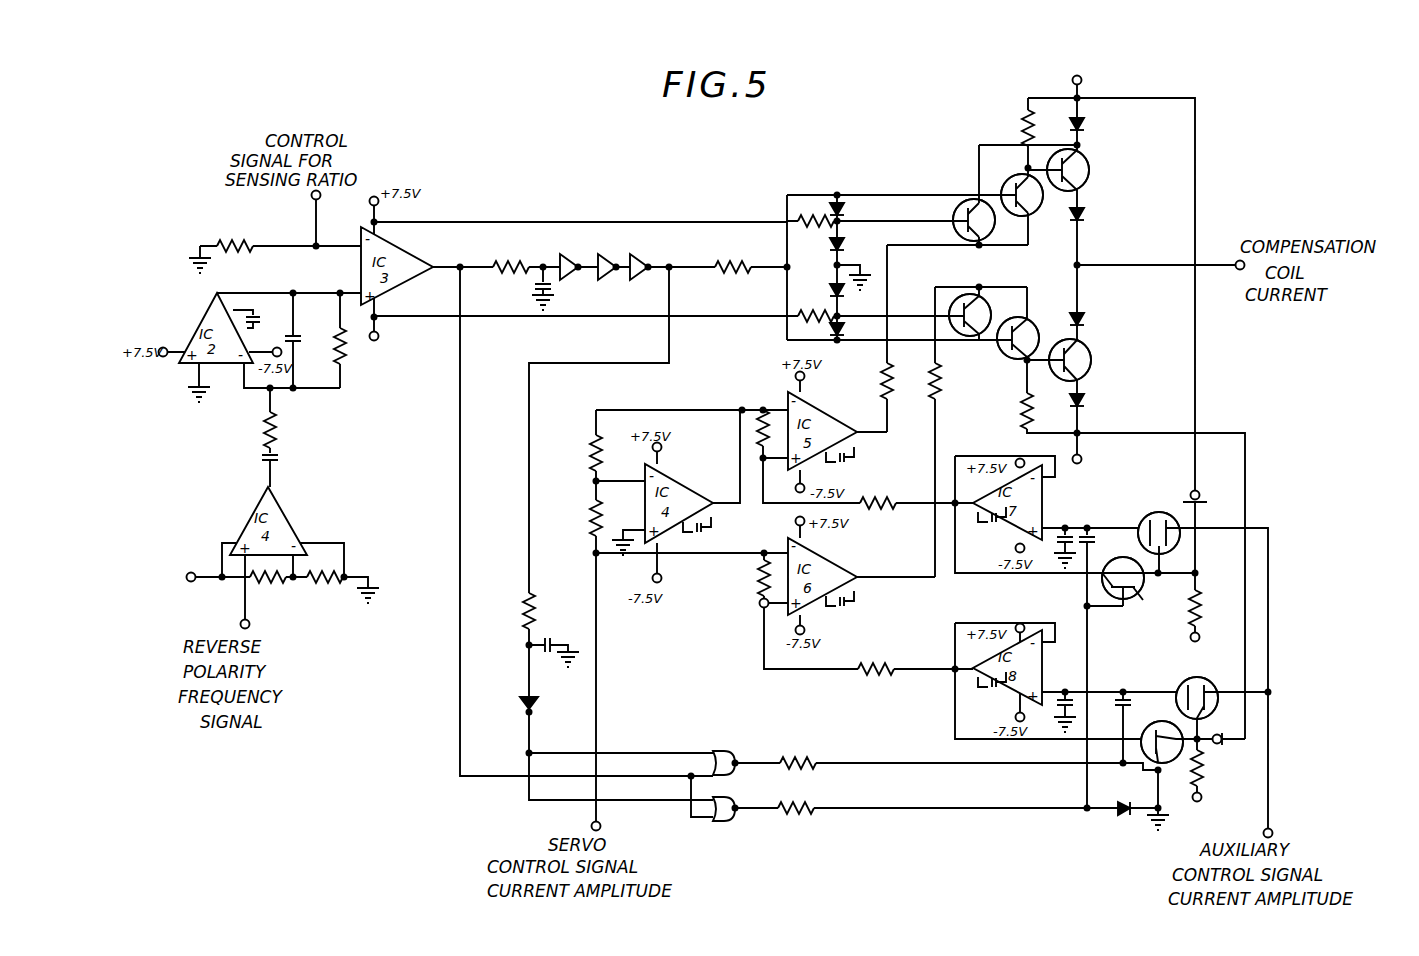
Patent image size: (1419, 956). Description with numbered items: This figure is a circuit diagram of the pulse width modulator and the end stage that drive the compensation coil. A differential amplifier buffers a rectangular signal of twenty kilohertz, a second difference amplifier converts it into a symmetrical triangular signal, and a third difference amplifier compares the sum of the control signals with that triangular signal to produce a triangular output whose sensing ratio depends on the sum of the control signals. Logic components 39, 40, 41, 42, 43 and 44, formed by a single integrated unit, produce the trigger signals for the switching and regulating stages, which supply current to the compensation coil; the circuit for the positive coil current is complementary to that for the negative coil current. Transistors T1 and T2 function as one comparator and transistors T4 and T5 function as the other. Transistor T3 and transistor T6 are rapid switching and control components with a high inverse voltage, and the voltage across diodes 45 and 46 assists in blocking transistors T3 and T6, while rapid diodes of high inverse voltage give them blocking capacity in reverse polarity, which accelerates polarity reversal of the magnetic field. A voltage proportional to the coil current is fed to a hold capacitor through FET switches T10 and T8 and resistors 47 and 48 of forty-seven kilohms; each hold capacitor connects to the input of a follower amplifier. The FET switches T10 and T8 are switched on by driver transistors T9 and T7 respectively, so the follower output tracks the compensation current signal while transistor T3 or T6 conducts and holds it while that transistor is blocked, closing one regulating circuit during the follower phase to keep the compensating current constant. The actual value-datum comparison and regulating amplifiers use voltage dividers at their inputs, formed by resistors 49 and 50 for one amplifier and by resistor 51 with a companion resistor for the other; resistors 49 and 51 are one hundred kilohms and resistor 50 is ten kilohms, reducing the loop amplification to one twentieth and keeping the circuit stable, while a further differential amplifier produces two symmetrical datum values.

The logic component 39 is at (575, 248).
The logic component 40 is at (612, 248).
The logic component 41 is at (642, 256).
The logic component 42 is at (536, 703).
The logic component 43 is at (730, 755).
The logic component 44 is at (728, 824).
The diode 45 is at (1084, 122).
The diode 46 is at (1086, 407).
The resistor 47 is at (796, 760).
The resistor 48 is at (808, 820).
The resistor 49 is at (883, 515).
The resistor 50 is at (758, 438).
The resistor 51 is at (760, 582).
The transistor T1 is at (956, 211).
The transistor T2 is at (1013, 184).
The transistor T3 is at (1090, 163).
The transistor T4 is at (989, 311).
The transistor T5 is at (1034, 326).
The transistor T6 is at (1091, 349).
The driver transistor T7 is at (1157, 723).
The FET switch T8 is at (1190, 682).
The driver transistor T9 is at (1143, 602).
The FET switch T10 is at (1160, 514).